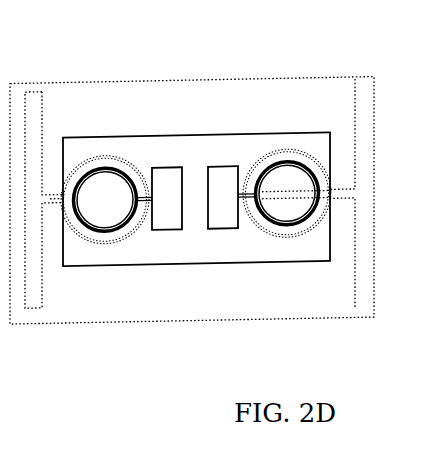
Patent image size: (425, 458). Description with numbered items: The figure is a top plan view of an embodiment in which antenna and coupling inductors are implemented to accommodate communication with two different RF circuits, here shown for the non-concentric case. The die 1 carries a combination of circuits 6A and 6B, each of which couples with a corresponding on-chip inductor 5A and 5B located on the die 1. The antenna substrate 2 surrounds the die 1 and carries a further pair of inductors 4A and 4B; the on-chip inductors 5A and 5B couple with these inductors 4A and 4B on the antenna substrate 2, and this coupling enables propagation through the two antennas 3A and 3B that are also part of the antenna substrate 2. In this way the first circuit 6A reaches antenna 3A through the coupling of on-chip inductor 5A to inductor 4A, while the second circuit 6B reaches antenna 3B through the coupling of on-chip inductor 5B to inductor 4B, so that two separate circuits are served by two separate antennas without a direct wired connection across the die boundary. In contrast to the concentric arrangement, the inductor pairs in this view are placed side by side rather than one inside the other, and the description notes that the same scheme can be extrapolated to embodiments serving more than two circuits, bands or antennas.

The die 1 is at (115, 267).
The antenna substrate 2 is at (281, 77).
The antenna 3A is at (358, 101).
The antenna 3B is at (46, 93).
The inductor 4A is at (263, 154).
The inductor 4B is at (118, 150).
The on-chip inductor 5A is at (290, 160).
The on-chip inductor 5B is at (105, 158).
The circuit 6A is at (227, 232).
The circuit 6B is at (175, 158).